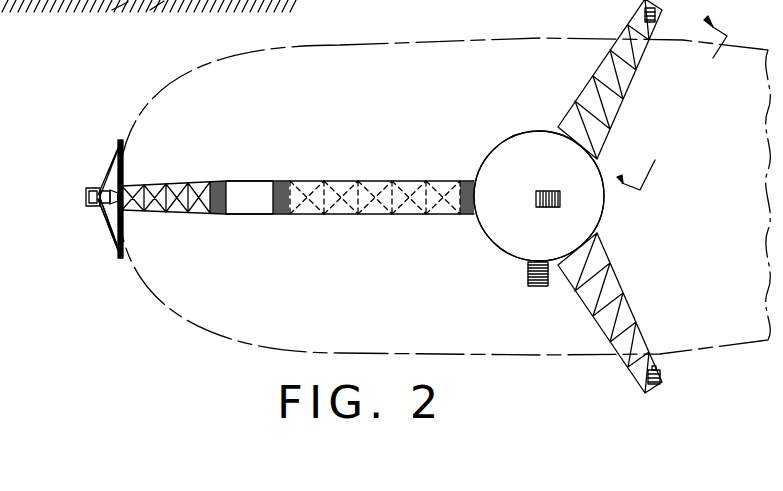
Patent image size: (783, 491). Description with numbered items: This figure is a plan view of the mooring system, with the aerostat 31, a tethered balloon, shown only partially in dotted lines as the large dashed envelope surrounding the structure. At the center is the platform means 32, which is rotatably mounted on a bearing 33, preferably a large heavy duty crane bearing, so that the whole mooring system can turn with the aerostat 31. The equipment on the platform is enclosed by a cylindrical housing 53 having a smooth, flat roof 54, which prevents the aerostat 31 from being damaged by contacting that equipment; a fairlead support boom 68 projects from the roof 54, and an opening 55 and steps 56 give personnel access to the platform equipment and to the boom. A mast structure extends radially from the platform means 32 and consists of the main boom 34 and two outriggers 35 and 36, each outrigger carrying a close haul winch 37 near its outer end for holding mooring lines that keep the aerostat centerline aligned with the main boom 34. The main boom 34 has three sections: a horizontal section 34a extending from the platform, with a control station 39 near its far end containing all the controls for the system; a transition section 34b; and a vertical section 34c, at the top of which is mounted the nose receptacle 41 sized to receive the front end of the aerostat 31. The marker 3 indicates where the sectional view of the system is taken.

The section line 3- 3 is at (670, 96).
The aerostat 31 is at (479, 40).
The platform means 32 is at (63, 5).
The bearing 33 is at (118, 2).
The opening 55 is at (150, 3).
The steps 56 is at (530, 284).
The main boom 34 is at (298, 221).
The horizontal section 34a is at (297, 216).
The transition section 34b is at (178, 213).
The vertical section 34c is at (100, 186).
The control station 39 is at (258, 192).
The nose receptacle 41 is at (108, 226).
The cylindrical housing 53 is at (508, 135).
The roof 54 is at (497, 241).
The fairlead support boom 68 is at (542, 207).
The outrigger 35 is at (590, 80).
The outrigger 36 is at (637, 320).
The close haul winch 37 is at (662, 380).